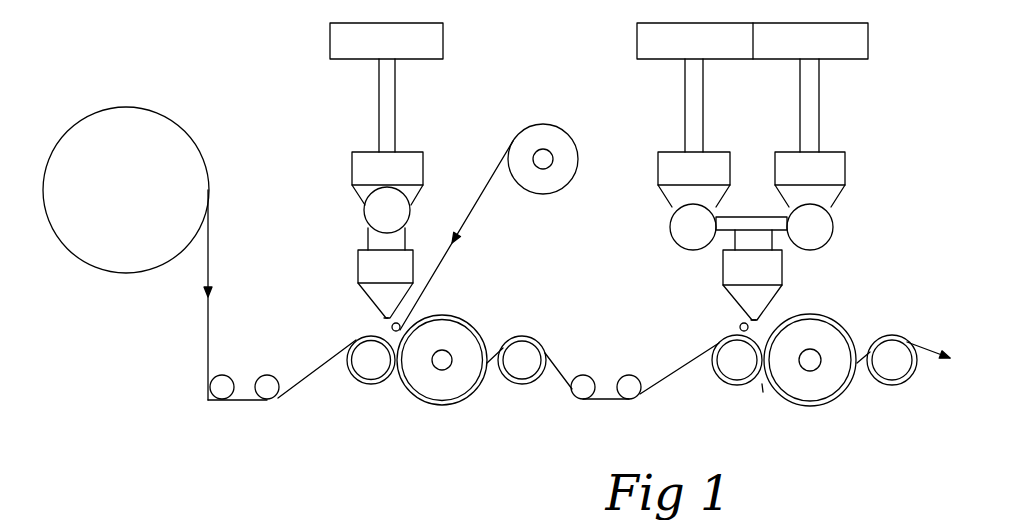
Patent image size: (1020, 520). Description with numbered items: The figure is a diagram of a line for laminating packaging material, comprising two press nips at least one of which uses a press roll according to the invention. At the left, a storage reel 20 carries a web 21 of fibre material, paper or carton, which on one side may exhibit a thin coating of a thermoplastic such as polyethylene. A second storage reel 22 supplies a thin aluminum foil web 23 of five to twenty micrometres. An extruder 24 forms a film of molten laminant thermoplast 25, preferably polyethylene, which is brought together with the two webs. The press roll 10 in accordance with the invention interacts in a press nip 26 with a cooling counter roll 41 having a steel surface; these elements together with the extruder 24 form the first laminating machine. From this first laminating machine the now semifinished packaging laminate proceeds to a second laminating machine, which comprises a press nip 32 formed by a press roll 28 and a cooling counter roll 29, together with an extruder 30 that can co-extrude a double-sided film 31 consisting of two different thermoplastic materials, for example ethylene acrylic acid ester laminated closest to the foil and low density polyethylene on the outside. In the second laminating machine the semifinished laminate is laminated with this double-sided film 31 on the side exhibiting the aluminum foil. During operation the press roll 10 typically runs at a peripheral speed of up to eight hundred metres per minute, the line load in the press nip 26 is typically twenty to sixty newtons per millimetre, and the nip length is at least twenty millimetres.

The press roll 10 is at (348, 404).
The storage reel 20 is at (143, 122).
The web of fibre material 21 is at (212, 246).
The storage reel 22 is at (553, 137).
The aluminum foil web 23 is at (466, 200).
The extruder 24 is at (338, 164).
The film of molten laminant thermoplast 25 is at (382, 328).
The press nip 26 is at (393, 391).
The cooling counter roll 41 is at (450, 333).
The extruder 30 is at (861, 169).
The double-sided film 31 is at (770, 316).
The press roll 28 is at (719, 372).
The cooling counter roll 29 is at (827, 335).
The press nip 32 is at (760, 390).